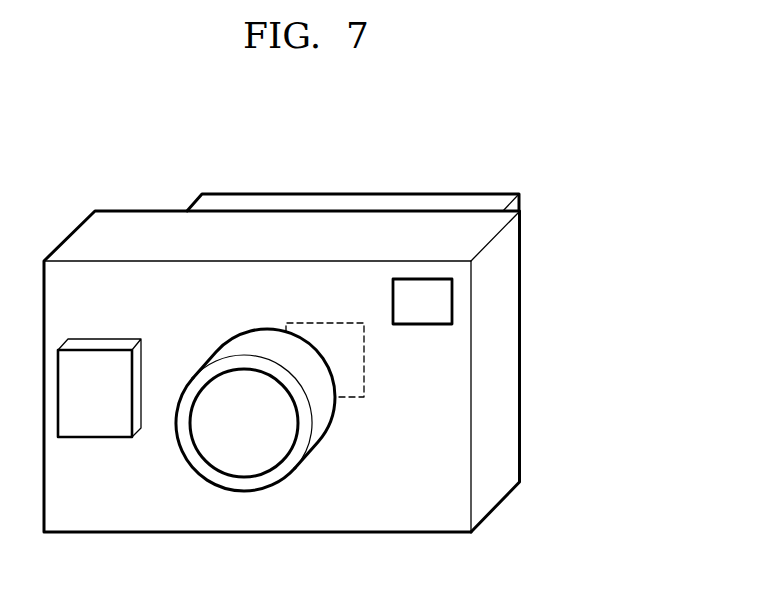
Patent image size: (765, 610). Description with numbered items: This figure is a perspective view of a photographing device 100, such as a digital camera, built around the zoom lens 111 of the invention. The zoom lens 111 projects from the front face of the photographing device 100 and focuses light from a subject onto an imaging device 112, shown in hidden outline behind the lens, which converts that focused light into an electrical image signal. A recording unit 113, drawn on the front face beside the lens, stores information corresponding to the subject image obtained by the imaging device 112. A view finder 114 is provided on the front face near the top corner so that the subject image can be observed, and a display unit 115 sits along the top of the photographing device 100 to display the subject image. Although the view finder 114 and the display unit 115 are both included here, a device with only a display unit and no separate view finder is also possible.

The photographing device 100 is at (429, 515).
The zoom lens 111 is at (242, 466).
The imaging device 112 is at (353, 394).
The recording unit 113 is at (104, 432).
The view finder 114 is at (448, 303).
The display unit 115 is at (408, 198).